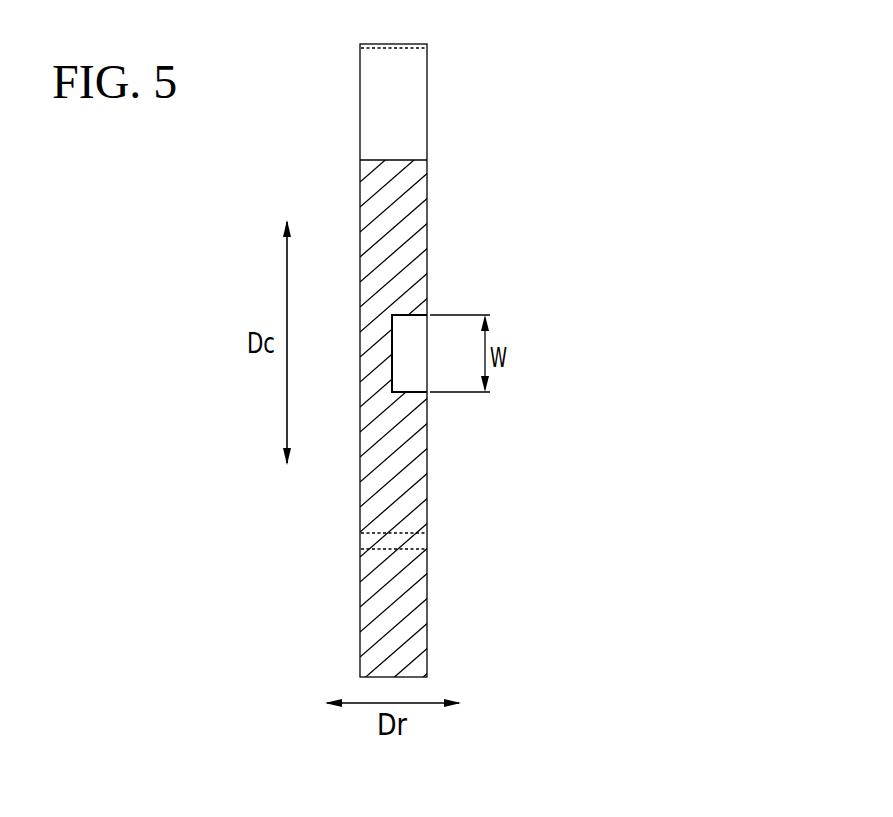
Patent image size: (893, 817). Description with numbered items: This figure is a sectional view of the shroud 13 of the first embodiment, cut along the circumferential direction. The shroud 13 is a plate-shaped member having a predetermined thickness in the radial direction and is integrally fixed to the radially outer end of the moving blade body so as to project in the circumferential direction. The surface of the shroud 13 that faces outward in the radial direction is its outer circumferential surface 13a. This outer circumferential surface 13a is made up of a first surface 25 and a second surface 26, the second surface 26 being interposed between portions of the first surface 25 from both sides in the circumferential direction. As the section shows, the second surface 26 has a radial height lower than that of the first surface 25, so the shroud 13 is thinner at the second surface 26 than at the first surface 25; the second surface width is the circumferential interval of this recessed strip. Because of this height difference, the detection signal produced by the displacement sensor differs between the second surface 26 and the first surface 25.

The shroud 13 is at (452, 63).
The outer circumferential surface 13a is at (427, 184).
The first surface 25 is at (427, 251).
The second surface 26 is at (393, 342).